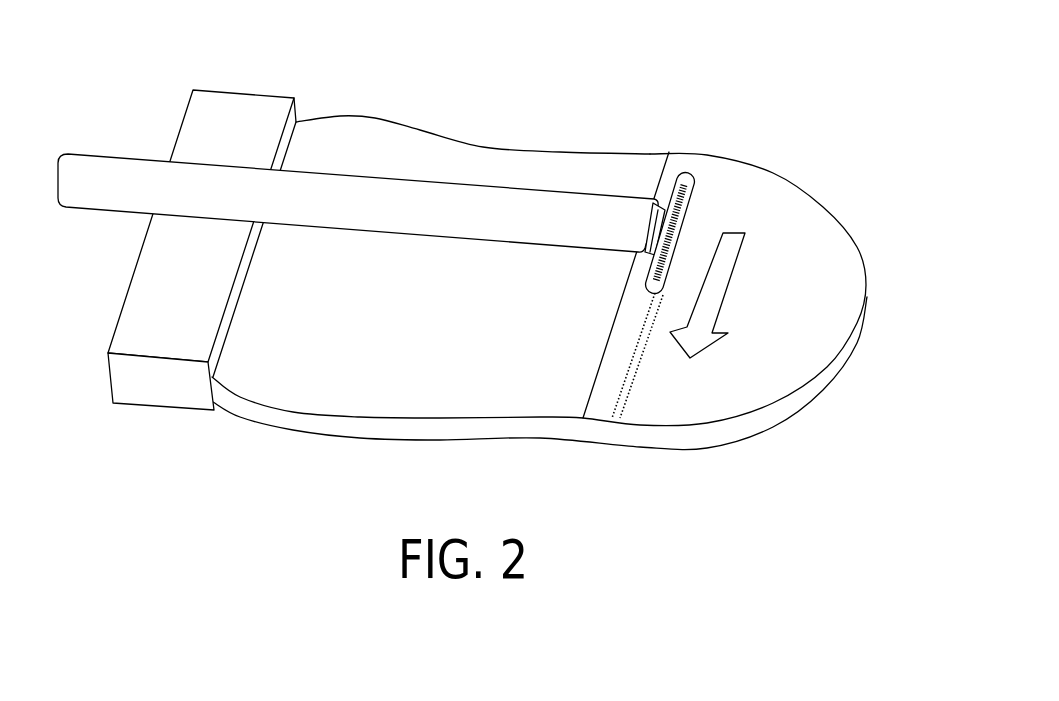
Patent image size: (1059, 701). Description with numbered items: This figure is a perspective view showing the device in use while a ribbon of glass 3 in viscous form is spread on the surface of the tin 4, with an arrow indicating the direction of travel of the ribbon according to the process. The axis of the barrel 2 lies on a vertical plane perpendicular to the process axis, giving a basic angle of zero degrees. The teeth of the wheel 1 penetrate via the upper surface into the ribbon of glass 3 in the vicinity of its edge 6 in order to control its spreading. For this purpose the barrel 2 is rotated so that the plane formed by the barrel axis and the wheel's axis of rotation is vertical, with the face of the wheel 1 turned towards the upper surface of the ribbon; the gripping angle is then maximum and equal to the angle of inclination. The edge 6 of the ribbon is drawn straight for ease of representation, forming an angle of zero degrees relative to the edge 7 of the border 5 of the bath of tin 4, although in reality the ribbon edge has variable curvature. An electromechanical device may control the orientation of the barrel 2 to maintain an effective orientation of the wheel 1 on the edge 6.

The wheel 1 is at (678, 183).
The barrel 2 is at (515, 217).
The ribbon of glass 3 is at (802, 213).
The tin 4 is at (387, 145).
The border 5 is at (197, 145).
The edge 6 is at (596, 378).
The edge 7 is at (218, 343).